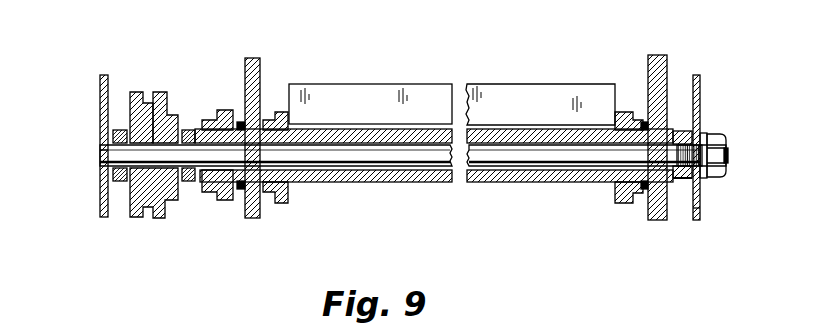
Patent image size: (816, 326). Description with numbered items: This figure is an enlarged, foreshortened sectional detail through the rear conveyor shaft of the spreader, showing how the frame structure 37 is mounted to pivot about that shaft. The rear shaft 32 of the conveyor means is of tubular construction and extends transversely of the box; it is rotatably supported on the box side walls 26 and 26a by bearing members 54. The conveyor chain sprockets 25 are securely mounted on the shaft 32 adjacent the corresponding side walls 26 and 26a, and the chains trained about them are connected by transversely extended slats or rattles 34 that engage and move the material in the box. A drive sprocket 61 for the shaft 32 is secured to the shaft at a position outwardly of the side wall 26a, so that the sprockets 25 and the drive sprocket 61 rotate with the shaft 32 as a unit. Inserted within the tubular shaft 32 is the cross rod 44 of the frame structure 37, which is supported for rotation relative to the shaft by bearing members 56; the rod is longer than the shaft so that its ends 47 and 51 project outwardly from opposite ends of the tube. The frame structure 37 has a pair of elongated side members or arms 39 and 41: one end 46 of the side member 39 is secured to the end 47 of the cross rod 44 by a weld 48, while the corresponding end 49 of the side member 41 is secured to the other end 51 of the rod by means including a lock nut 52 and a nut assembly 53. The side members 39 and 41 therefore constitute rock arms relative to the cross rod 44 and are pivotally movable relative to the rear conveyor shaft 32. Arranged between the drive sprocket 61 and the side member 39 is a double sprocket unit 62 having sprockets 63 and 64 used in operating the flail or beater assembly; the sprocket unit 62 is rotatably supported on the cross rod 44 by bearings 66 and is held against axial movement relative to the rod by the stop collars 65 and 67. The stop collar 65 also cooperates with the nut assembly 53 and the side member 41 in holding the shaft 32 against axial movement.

The sprockets 25 is at (272, 200).
The side wall 26 is at (648, 62).
The side wall 26a is at (256, 58).
The rear shaft 32 is at (318, 131).
The slats or rattles 34 is at (410, 93).
The frame structure 37 is at (713, 91).
The side member 39 is at (100, 103).
The side member 41 is at (700, 80).
The cross rod 44 is at (374, 182).
The end of side member 39 46 is at (100, 180).
The end of cross rod 47 is at (100, 152).
The weld 48 is at (100, 163).
The end of side member 41 49 is at (700, 208).
The end of cross rod 51 is at (682, 179).
The lock nut 52 is at (703, 133).
The nut assembly 53 is at (710, 135).
The bearing members 54 is at (240, 128).
The bearing members 56 is at (240, 190).
The drive sprocket 61 is at (225, 112).
The double sprocket unit 62 is at (156, 80).
The sprocket 63 is at (136, 92).
The sprocket 64 is at (160, 92).
The stop collar 65 is at (188, 182).
The bearings 66 is at (148, 208).
The stop collar 67 is at (119, 182).